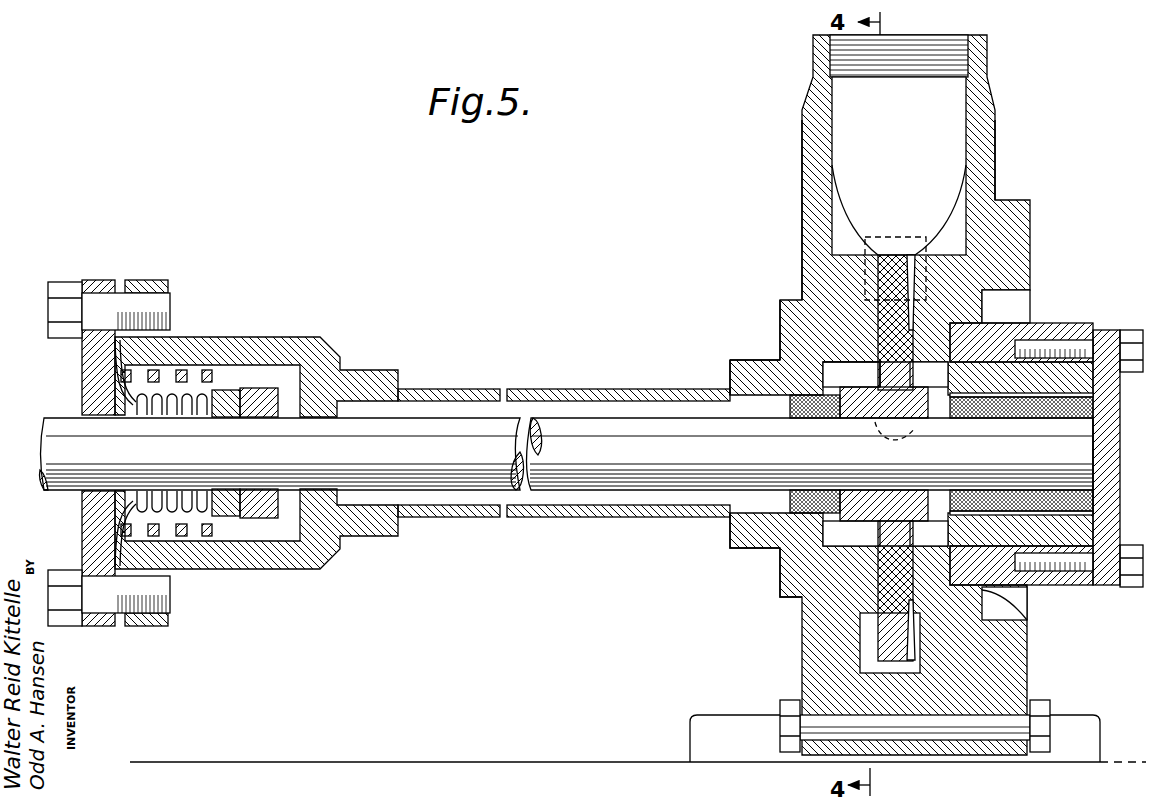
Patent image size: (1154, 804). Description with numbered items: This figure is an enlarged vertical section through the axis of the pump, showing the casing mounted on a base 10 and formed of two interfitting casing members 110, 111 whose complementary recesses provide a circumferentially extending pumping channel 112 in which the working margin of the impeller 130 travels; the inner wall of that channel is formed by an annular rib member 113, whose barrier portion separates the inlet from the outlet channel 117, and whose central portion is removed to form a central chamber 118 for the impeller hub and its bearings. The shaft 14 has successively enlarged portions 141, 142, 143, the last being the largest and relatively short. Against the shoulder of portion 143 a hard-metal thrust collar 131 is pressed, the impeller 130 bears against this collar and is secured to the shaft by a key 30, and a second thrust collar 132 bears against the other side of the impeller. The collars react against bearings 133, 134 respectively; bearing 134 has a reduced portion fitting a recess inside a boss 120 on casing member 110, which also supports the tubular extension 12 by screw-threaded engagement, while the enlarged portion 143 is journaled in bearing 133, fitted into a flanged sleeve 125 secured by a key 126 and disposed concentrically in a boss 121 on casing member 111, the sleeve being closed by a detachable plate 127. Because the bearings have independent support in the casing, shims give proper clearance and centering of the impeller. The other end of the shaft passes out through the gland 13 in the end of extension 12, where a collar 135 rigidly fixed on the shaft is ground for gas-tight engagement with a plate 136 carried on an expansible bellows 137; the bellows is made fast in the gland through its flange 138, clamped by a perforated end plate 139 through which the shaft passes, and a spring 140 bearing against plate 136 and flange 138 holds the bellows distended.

The base 10 is at (1082, 208).
The extension 12 is at (560, 389).
The shaft seal or gland 13 is at (236, 338).
The shaft 14 is at (440, 417).
The key 30 is at (906, 435).
The casing member 110 is at (802, 265).
The casing member 111 is at (1030, 268).
The pumping channel 112 is at (848, 240).
The annular rib member 113 is at (840, 318).
The outlet channel 117 is at (945, 140).
The central chamber 118 is at (843, 372).
The boss 120 is at (733, 368).
The boss 121 is at (1035, 325).
The flanged sleeve 125 is at (1085, 328).
The key 126 is at (1095, 402).
The detachable plate 127 is at (1105, 520).
The impeller 130 is at (885, 297).
The thrust collar 131 is at (1012, 615).
The second thrust collar 132 is at (795, 555).
The bearing 133 is at (1090, 510).
The bearing 134 is at (790, 400).
The collar 135 is at (263, 515).
The plate 136 is at (233, 368).
The expansible bellows 137 is at (200, 522).
The flange 138 is at (113, 370).
The perforated end plate 139 is at (82, 390).
The spring 140 is at (153, 380).
The enlarged shaft portion 141 is at (577, 492).
The enlarged shaft portion 142 is at (860, 445).
The enlarged shaft portion 143 is at (1085, 440).